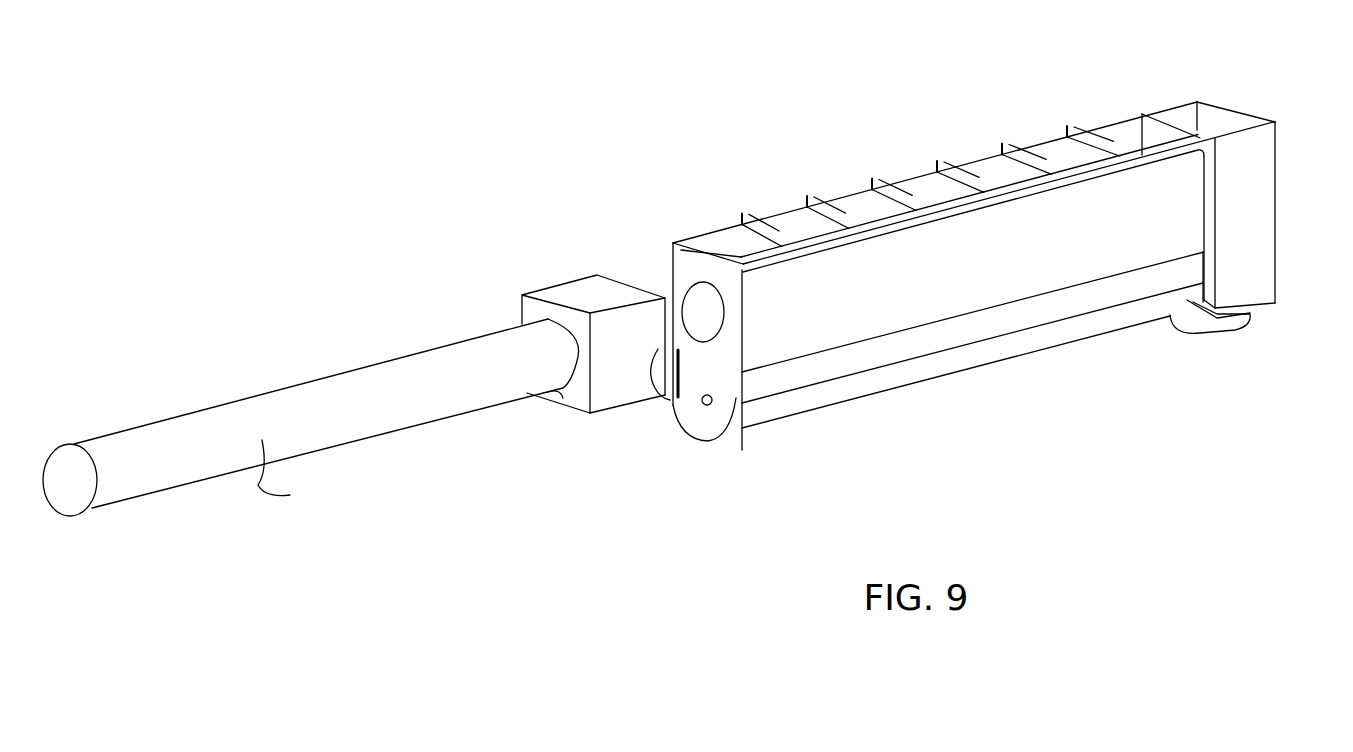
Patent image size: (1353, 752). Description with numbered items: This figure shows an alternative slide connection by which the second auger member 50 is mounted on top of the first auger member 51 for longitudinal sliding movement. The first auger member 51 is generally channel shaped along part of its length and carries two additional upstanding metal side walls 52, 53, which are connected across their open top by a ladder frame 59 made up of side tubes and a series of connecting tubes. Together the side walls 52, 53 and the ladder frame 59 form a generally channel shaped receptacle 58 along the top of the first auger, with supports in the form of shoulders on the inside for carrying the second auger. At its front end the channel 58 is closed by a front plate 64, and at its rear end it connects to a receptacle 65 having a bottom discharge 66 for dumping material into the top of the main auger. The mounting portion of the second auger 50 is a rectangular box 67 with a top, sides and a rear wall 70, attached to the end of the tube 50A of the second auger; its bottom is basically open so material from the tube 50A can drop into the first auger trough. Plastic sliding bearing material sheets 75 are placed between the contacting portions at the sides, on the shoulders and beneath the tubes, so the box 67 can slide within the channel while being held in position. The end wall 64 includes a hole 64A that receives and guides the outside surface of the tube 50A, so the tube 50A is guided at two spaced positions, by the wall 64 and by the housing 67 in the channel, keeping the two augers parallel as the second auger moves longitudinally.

The second auger member 50 is at (322, 395).
The tube of the second auger 50A is at (307, 474).
The first auger member 51 is at (1013, 292).
The side wall 52 is at (670, 398).
The side wall 53 is at (820, 333).
The channel shaped receptacle 58 is at (990, 270).
The ladder frame 59 is at (757, 232).
The front plate 64 is at (720, 358).
The hole 64A is at (712, 312).
The receptacle 65 is at (1250, 200).
The bottom discharge 66 is at (1237, 328).
The rectangular box 67 is at (585, 298).
The rear wall 70 is at (564, 395).
The plastic sliding bearing material sheets 75 is at (532, 292).